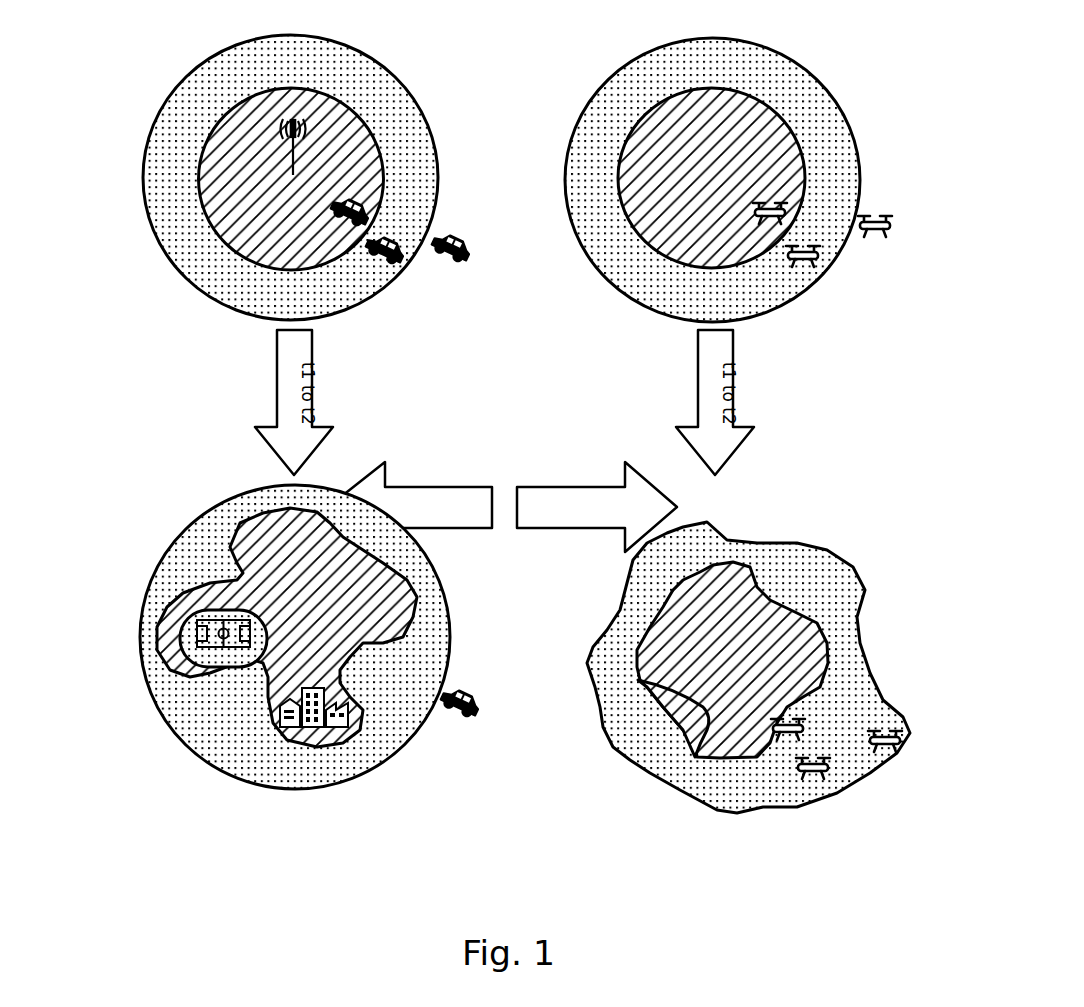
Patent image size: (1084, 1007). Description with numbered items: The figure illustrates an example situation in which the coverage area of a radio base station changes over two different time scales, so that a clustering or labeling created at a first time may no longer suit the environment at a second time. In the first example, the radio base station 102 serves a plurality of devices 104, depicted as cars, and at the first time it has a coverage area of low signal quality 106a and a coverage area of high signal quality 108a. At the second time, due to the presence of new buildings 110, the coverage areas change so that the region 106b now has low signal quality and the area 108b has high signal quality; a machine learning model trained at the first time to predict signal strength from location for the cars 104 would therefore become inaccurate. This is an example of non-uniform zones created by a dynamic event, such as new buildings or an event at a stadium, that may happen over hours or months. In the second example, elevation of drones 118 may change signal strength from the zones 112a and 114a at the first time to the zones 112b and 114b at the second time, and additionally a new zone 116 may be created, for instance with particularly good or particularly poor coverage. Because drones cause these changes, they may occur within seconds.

The radio base station 102 is at (267, 128).
The devices 104 is at (367, 205).
The coverage area of low signal quality 106a is at (393, 102).
The coverage area of high signal quality 108a is at (248, 228).
The region of low signal quality 106b is at (232, 508).
The area of high signal quality 108b is at (312, 735).
The new buildings 110 is at (187, 643).
The zone 112a is at (778, 73).
The zone 114a is at (657, 213).
The zone 112b is at (813, 568).
The zone 114b is at (725, 747).
The new zone 116 is at (665, 713).
The drones 118 is at (790, 207).